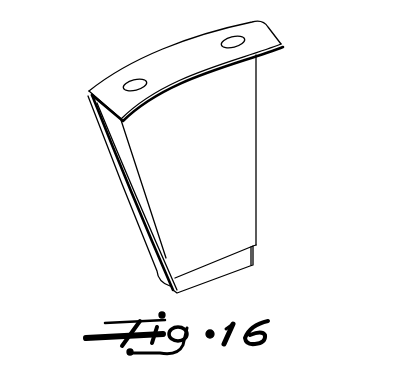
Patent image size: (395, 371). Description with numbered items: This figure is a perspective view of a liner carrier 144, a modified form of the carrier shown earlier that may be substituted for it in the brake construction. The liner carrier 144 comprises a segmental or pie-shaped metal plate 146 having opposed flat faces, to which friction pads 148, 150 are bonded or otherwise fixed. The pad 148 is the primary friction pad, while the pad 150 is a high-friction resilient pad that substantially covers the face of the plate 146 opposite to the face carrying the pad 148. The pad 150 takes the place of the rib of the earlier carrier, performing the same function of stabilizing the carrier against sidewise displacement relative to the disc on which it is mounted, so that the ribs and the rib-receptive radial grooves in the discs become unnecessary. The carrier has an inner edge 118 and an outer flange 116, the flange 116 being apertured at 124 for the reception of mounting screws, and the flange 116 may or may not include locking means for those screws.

The outer flange 116 is at (280, 44).
The aperture 124 is at (137, 79).
The liner carrier 144 is at (284, 173).
The segmental metal plate 146 is at (116, 168).
The primary friction pad 148 is at (95, 120).
The high-friction resilient pad 150 is at (112, 135).
The inner edge 118 is at (231, 272).